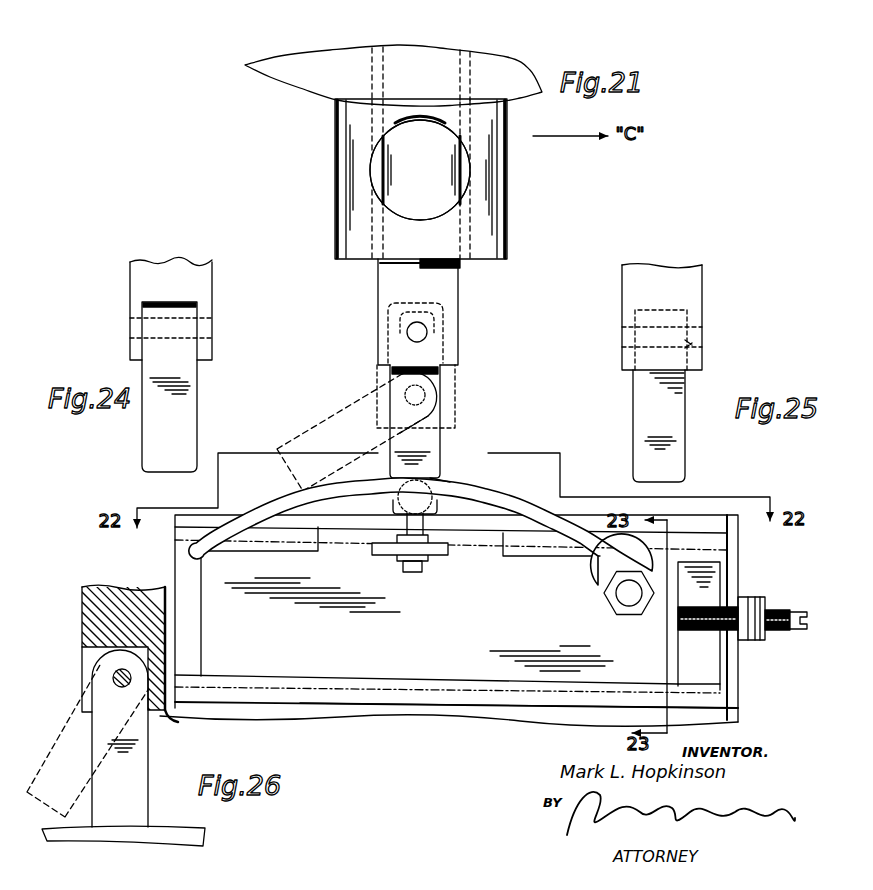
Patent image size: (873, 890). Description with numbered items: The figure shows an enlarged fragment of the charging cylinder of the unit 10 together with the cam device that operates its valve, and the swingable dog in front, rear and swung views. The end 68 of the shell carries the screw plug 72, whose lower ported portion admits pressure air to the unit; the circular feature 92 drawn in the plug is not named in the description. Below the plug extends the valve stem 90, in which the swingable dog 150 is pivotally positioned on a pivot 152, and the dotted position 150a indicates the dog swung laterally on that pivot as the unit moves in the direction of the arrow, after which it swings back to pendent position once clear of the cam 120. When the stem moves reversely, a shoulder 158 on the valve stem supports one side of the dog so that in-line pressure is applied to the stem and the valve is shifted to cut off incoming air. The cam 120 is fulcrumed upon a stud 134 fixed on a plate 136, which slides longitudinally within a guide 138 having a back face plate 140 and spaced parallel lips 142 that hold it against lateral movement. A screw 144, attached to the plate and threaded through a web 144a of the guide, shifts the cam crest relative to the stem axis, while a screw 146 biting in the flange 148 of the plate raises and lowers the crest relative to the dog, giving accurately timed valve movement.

In FIG. 21, the unit 10 is at (535, 53).
In FIG. 21, the end of the shell 68 is at (318, 77).
In FIG. 21, the screw plug 72 is at (503, 172).
In FIG. 21, the circular opening 92 is at (463, 180).
In FIG. 21, the valve stem 90 is at (448, 287).
In FIG. 24, the valve stem 90 is at (193, 280).
In FIG. 25, the valve stem 90 is at (692, 282).
In FIG. 26, the valve stem 90 is at (82, 617).
In FIG. 21, the shoulder 158 is at (452, 345).
In FIG. 25, the shoulder 158 is at (692, 318).
In FIG. 26, the shoulder 158 is at (157, 720).
In FIG. 21, the pivot pin 152 is at (407, 332).
In FIG. 25, the pivot pin 152 is at (692, 342).
In FIG. 26, the pivot pin 152 is at (113, 677).
In FIG. 21, the swingable dog 150 is at (435, 420).
In FIG. 24, the swingable dog 150 is at (190, 375).
In FIG. 25, the swingable dog 150 is at (670, 395).
In FIG. 26, the swingable dog 150 is at (135, 763).
In FIG. 21, the swing arm in tilted position 150a is at (328, 413).
In FIG. 21, the cam 120 is at (467, 483).
In FIG. 26, the cam 120 is at (177, 832).
In FIG. 21, the back face plate 140 is at (187, 573).
In FIG. 21, the spaced parallel lips 142 is at (260, 543).
In FIG. 21, the flange 148 is at (385, 550).
In FIG. 21, the screw 146 is at (417, 570).
In FIG. 21, the stud 134 is at (627, 592).
In FIG. 21, the plate 136 is at (677, 662).
In FIG. 21, the screw 144 is at (786, 633).
In FIG. 21, the web 144a is at (732, 572).
In FIG. 21, the guide 138 is at (514, 706).